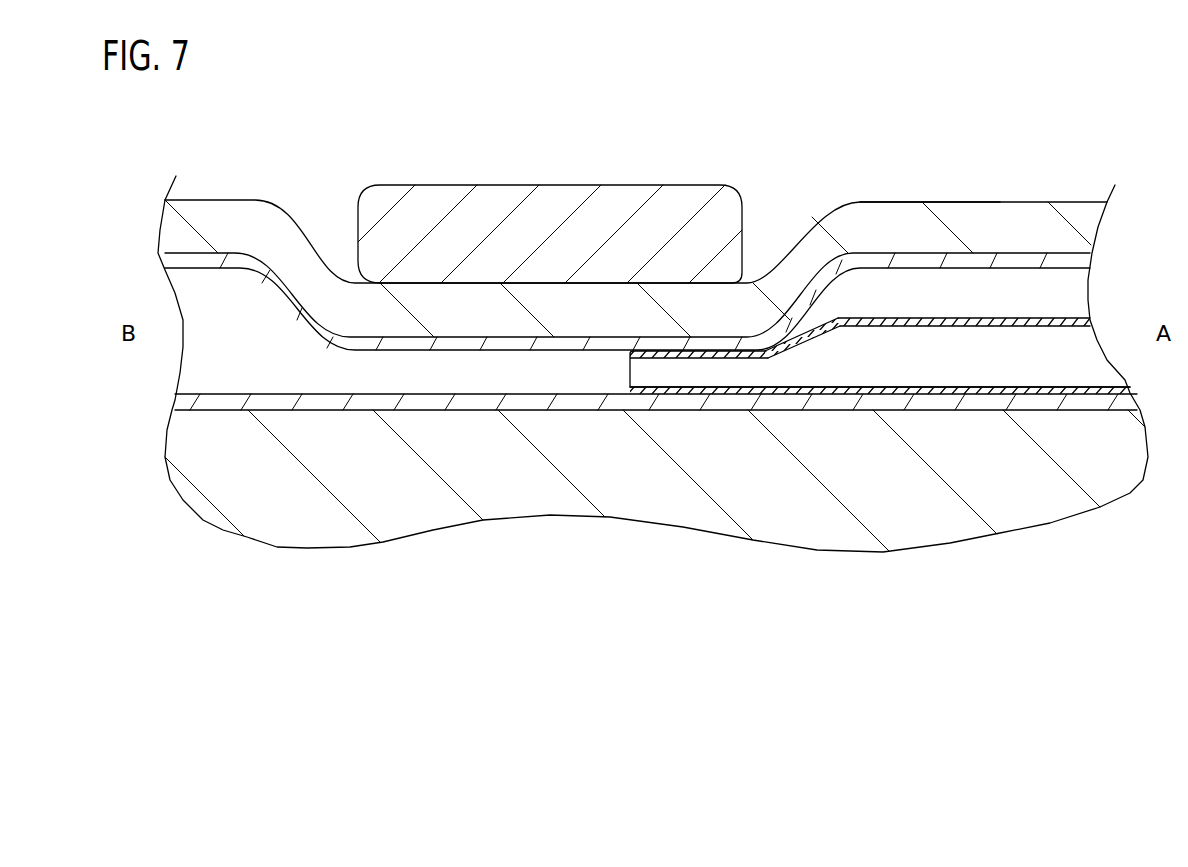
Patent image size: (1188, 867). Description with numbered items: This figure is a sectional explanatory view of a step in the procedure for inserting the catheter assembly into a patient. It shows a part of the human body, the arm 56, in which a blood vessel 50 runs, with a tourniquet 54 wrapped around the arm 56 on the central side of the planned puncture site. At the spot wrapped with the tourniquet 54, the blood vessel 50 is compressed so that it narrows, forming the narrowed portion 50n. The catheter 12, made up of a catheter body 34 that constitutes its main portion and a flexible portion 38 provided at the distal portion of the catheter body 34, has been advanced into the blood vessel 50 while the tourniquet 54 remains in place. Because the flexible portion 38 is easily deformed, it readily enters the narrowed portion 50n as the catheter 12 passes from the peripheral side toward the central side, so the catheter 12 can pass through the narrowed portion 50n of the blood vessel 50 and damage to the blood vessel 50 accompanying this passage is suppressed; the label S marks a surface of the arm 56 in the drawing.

The arm 56 is at (1033, 197).
The surface S is at (887, 196).
The blood vessel 50 is at (917, 248).
The narrowed portion 50n is at (562, 345).
The tourniquet 54 is at (508, 180).
The catheter 12 is at (970, 310).
The flexible portion 38 is at (678, 392).
The catheter body 34 is at (940, 394).